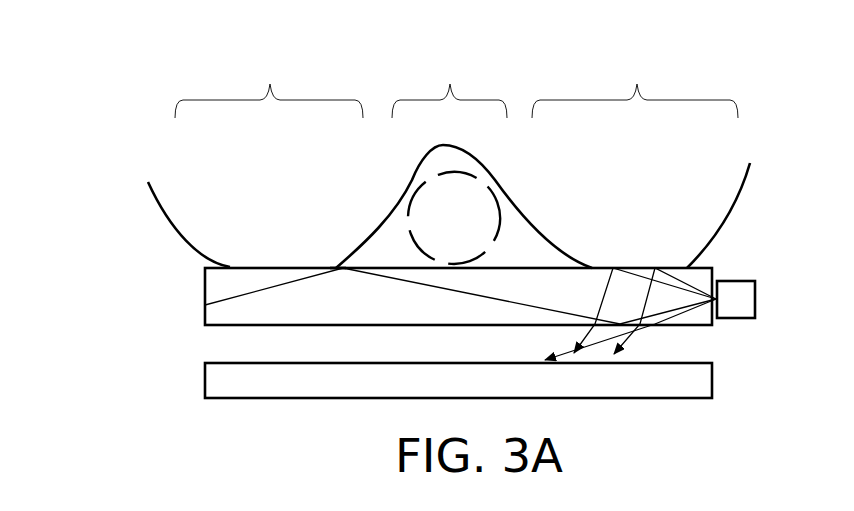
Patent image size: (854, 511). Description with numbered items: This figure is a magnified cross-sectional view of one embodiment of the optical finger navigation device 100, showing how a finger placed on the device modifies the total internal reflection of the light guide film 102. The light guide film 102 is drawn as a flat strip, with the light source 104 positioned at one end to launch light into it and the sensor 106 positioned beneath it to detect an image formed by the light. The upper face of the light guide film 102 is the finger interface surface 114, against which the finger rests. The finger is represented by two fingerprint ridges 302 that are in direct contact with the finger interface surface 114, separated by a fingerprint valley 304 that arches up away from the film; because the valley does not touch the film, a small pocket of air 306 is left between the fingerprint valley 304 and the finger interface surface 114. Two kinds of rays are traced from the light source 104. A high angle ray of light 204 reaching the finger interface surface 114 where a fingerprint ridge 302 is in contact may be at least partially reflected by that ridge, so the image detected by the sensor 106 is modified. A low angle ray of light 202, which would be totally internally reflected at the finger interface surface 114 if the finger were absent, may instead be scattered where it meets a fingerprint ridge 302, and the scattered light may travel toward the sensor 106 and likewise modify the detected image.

The optical finger navigation device 100 is at (172, 64).
The light guide film 102 is at (205, 298).
The light source 104 is at (756, 299).
The sensor 106 is at (205, 382).
The finger interface surface 114 is at (328, 258).
The low angle ray of light 202 is at (712, 320).
The high angle ray of light 204 is at (675, 276).
The fingerprint ridges 302 is at (449, 160).
The fingerprint valley 304 is at (464, 160).
The pocket of air 306 is at (400, 205).